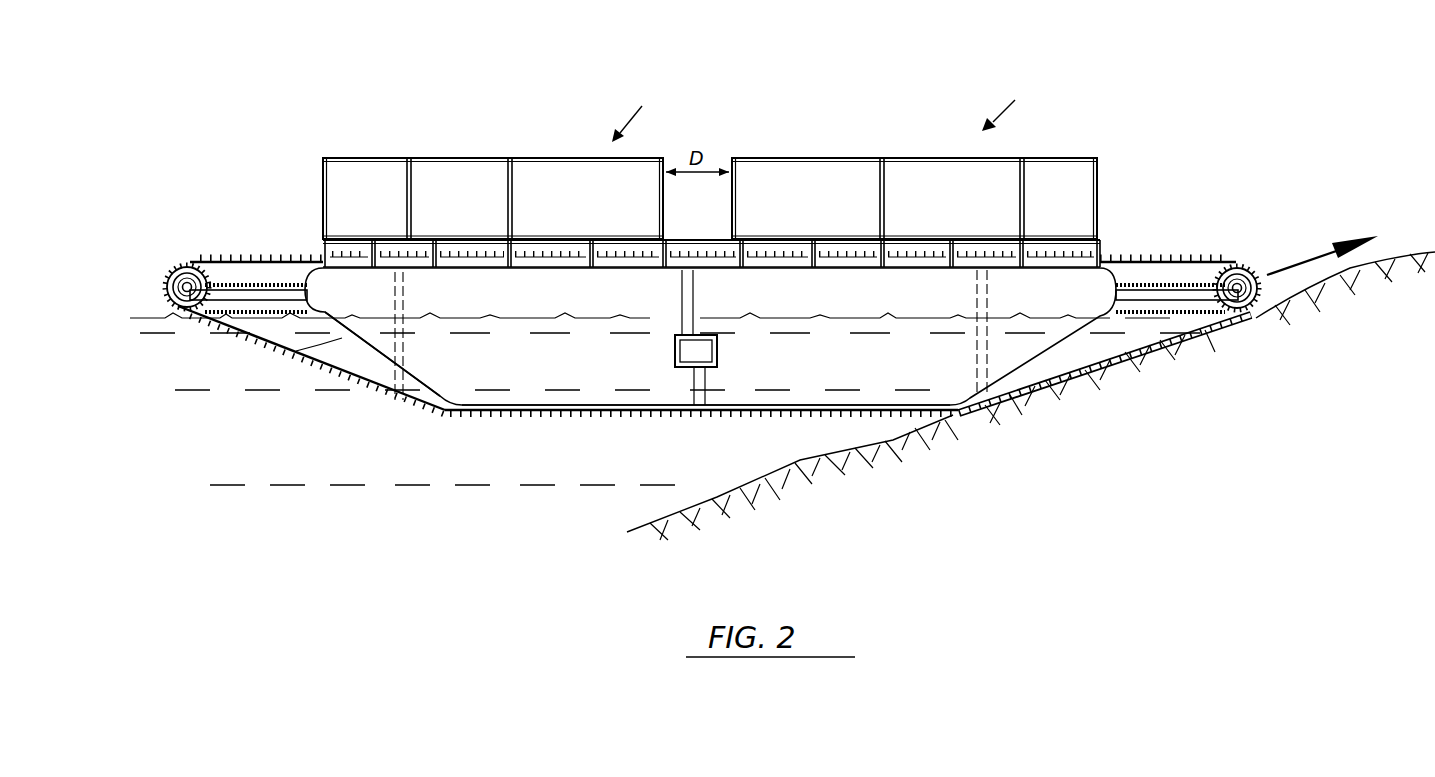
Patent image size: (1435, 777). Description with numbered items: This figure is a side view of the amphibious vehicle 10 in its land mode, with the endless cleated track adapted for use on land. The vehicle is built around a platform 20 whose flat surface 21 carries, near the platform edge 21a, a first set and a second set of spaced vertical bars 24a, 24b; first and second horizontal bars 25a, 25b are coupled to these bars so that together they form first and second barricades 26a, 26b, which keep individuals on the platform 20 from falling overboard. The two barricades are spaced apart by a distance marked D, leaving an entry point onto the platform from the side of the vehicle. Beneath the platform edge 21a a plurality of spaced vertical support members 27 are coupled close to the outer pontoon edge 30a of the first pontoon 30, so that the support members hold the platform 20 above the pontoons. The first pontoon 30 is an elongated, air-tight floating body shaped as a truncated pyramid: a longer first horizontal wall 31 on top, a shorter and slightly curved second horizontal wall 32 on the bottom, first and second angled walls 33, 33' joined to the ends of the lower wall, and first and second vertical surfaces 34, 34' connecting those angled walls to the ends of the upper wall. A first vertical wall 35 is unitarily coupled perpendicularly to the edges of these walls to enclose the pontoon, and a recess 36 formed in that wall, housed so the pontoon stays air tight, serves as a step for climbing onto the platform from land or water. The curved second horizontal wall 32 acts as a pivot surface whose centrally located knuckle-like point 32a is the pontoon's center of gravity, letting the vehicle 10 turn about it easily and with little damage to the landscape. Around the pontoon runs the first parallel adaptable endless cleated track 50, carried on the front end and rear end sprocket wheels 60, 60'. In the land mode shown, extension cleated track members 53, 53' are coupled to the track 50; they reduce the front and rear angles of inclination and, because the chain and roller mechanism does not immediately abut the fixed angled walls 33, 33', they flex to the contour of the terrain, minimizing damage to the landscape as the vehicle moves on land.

The amphibious vehicle 10 is at (567, 74).
The platform 20 is at (1060, 240).
The flat surface 21 is at (763, 230).
The platform edge 21a is at (553, 228).
The first set of vertical bars 24a is at (330, 198).
The second set of vertical bars 24b is at (888, 200).
The first horizontal bar 25a is at (453, 157).
The second horizontal bar 25b is at (812, 157).
The first barricade 26a is at (651, 117).
The second barricade 26b is at (1021, 108).
The vertical support members 27 is at (510, 270).
The first pontoon 30 is at (1068, 312).
The outer pontoon edge 30a is at (910, 272).
The first horizontal wall 31 is at (645, 270).
The second horizontal wall 32 is at (550, 410).
The knuckle-like point 32a is at (700, 410).
The first angled wall 33 is at (756, 438).
The second angled wall 33' is at (312, 360).
The first vertical surface 34 is at (1126, 297).
The second vertical surface 34' is at (286, 294).
The first vertical wall 35 is at (440, 360).
The recess 36 is at (680, 368).
The first parallel adaptable endless cleated track 50 is at (1218, 264).
The extension cleated track member 53 is at (1031, 396).
The extension cleated track member 53' is at (314, 400).
The front end sprocket wheel 60 is at (1321, 239).
The rear end sprocket wheel 60' is at (218, 253).